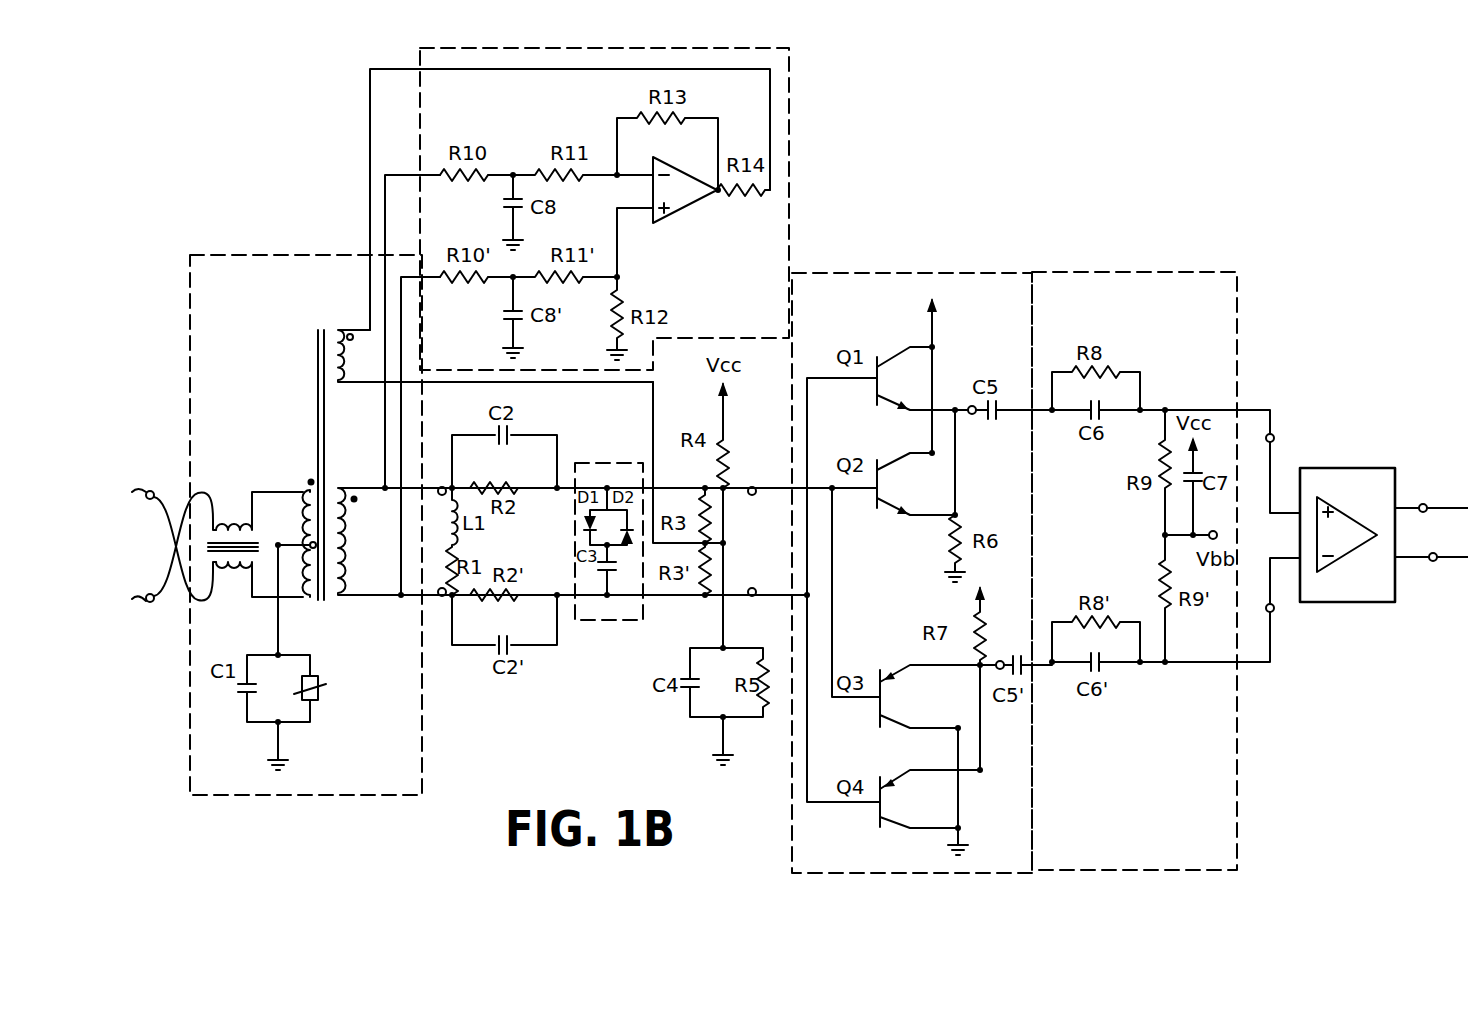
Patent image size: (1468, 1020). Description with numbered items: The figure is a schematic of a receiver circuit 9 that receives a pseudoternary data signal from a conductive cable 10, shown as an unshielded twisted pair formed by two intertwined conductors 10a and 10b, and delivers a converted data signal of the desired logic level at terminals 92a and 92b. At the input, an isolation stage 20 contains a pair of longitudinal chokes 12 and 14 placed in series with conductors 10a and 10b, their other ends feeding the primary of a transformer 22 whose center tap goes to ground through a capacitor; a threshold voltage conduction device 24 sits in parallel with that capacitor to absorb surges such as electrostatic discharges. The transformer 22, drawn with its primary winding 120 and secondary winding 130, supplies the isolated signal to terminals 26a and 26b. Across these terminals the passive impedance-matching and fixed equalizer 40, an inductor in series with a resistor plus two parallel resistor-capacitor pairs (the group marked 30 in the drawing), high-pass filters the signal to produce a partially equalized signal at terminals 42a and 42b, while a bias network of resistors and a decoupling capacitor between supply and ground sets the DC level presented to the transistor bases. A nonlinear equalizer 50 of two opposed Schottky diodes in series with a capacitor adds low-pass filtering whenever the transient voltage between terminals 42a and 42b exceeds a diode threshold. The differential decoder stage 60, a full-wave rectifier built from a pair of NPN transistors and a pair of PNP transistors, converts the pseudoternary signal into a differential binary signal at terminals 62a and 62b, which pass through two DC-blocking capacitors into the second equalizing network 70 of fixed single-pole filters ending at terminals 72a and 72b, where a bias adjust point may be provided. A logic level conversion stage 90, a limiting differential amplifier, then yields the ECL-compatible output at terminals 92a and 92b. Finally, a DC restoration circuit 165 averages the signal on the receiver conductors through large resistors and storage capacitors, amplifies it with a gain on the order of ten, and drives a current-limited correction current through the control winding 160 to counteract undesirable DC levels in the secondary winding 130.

The receiver circuit 9 is at (825, 143).
The conductive cable 10 is at (153, 454).
The conductor 10a is at (150, 491).
The conductor 10b is at (152, 602).
The longitudinal choke 12 is at (228, 529).
The longitudinal choke 14 is at (232, 567).
The isolation stage 20 is at (274, 245).
The transformer 22 is at (314, 437).
The threshold voltage conduction device 24 is at (316, 678).
The terminal 26a is at (440, 486).
The terminal 26b is at (440, 596).
The tuning network 30 is at (505, 546).
The fixed equalizer 40 is at (530, 660).
The terminal 42a is at (751, 487).
The terminal 42b is at (752, 598).
The nonlinear equalizer 50 is at (620, 622).
The differential decoder stage 60 is at (964, 272).
The terminal 62a is at (975, 414).
The terminal 62b is at (1001, 660).
The second equalizing network 70 is at (1198, 270).
The terminal 72a is at (1274, 438).
The terminal 72b is at (1274, 612).
The logic level conversion stage 90 is at (1350, 468).
The terminal 92a is at (1423, 504).
The terminal 92b is at (1433, 561).
The center-tapped winding 120 is at (286, 538).
The secondary winding 130 is at (369, 541).
The control winding 160 is at (337, 334).
The DC restoration circuit 165 is at (418, 64).